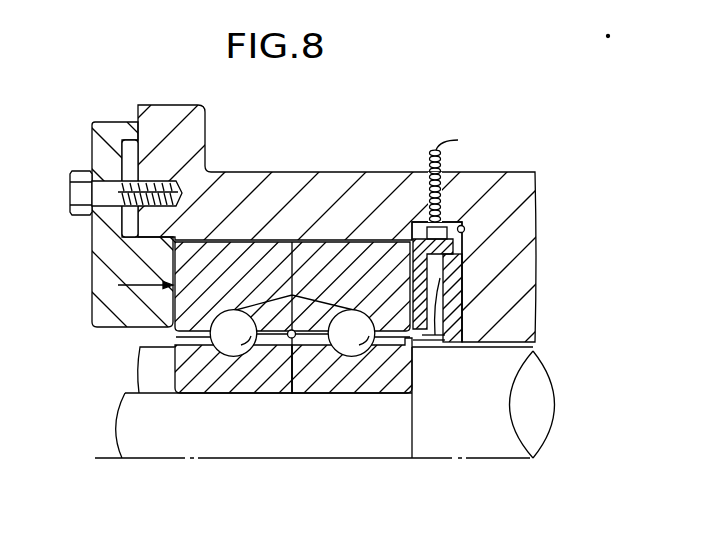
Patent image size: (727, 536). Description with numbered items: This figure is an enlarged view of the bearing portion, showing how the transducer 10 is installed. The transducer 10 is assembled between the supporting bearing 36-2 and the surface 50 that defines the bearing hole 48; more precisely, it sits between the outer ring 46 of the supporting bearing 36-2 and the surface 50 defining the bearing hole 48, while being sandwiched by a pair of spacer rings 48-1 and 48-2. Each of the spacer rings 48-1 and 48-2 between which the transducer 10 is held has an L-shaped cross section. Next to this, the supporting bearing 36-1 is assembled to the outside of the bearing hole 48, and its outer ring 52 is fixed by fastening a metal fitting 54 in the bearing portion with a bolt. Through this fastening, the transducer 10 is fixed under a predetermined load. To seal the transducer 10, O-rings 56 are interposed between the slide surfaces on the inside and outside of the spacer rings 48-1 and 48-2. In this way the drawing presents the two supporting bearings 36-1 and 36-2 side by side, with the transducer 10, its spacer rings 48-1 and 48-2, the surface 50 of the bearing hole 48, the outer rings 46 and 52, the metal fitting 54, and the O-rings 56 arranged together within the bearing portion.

The transducer 10 is at (441, 279).
The supporting bearing 36-1 is at (222, 400).
The supporting bearing 36-2 is at (329, 400).
The outer ring 46 is at (323, 253).
The bearing hole 48 is at (223, 243).
The spacer ring 48-1 is at (463, 318).
The spacer ring 48-2 is at (414, 228).
The surface 50 is at (464, 231).
The outer ring 52 is at (265, 247).
The metal fitting 54 is at (100, 271).
The O-rings 56 is at (434, 340).